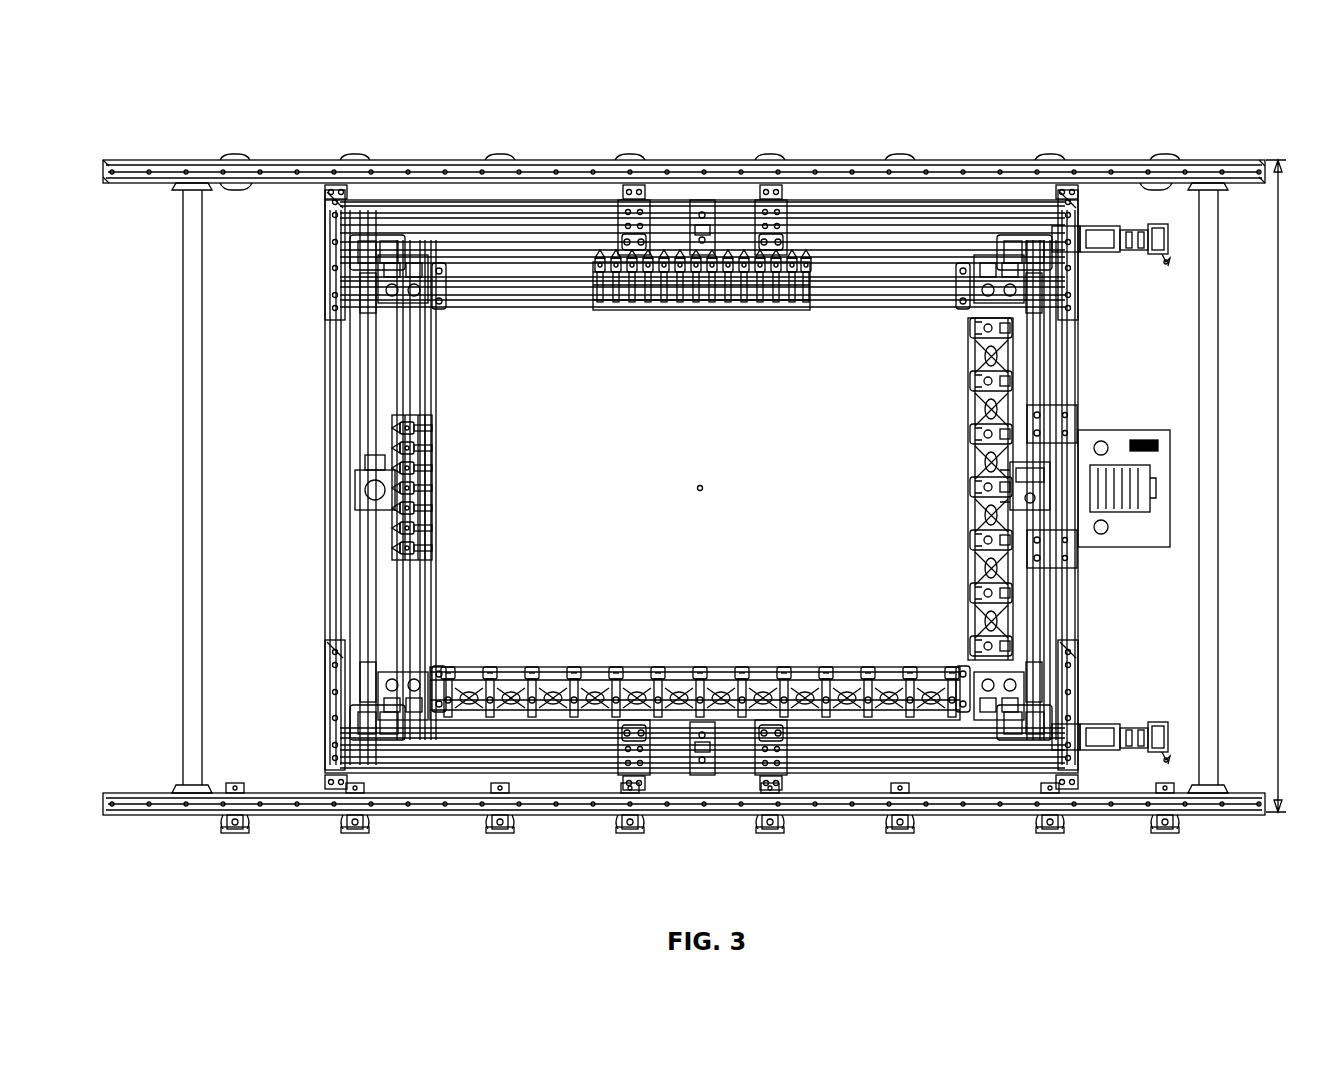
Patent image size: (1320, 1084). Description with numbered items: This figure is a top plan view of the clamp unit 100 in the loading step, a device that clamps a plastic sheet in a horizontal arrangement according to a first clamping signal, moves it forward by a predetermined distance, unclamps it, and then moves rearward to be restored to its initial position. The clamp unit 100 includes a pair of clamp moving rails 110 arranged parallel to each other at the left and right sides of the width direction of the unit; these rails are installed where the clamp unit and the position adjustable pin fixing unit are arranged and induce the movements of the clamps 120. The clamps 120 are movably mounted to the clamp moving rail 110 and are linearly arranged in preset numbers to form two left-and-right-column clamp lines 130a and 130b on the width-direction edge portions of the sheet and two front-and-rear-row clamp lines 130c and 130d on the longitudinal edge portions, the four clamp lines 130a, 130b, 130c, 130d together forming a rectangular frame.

The clamp unit in the loading step 100 is at (706, 435).
The clamp moving rail in the loading step 110 is at (548, 162).
The clamps in the loading step 120 is at (620, 317).
The left-and-right-column clamp line in the loading step 130a is at (678, 628).
The left-and-right-column clamp line in the loading step 130b is at (680, 342).
The front-and-rear-row clamp line in the loading step 130c is at (455, 516).
The front-and-rear-row clamp line in the loading step 130d is at (948, 521).